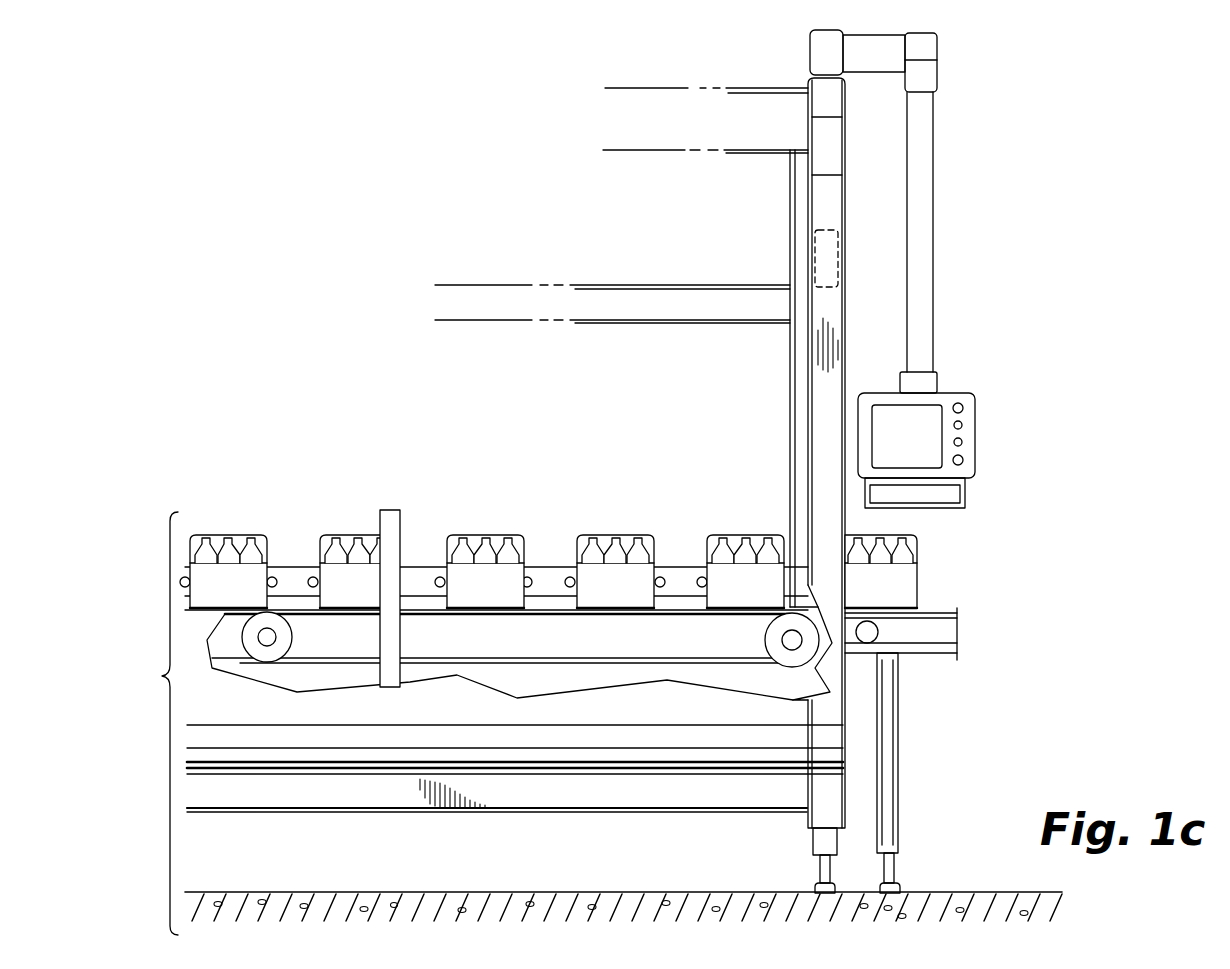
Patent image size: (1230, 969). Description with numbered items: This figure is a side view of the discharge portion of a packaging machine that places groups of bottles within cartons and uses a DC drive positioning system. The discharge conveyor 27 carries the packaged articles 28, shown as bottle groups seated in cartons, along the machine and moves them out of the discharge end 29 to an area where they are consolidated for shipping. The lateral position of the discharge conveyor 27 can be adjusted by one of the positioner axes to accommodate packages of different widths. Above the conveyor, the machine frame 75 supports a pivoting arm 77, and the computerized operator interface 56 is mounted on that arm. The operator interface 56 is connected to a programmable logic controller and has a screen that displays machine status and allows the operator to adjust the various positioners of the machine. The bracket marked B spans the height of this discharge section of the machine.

The frame 75 is at (650, 288).
The pivoting arm 77 is at (927, 237).
The operator interface 56 is at (973, 393).
The packaged articles 28 is at (632, 537).
The discharge conveyor 27 is at (657, 667).
The discharge end 29 is at (1006, 636).
The bottling station B is at (157, 723).